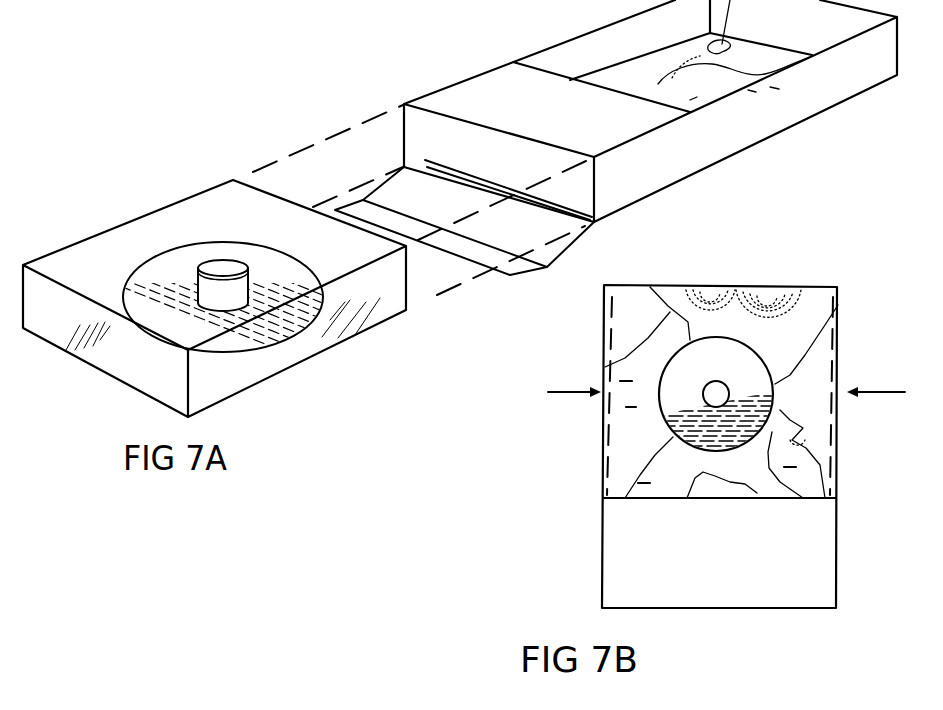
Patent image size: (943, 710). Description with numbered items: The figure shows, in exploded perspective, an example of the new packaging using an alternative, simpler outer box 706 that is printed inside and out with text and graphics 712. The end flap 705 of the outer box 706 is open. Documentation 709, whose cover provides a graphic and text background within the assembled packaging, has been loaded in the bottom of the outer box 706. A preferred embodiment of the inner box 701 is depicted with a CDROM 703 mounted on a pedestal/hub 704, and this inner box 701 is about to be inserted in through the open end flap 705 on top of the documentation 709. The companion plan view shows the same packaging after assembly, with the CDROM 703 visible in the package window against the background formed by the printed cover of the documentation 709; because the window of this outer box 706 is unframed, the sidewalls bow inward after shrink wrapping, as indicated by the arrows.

In FIG. 7A, the inner box 701 is at (307, 360).
In FIG. 7A, the CDROM 703 is at (166, 256).
In FIG. 7B, the CDROM 703 is at (670, 407).
In FIG. 7A, the pedestal/hub 704 is at (222, 258).
In FIG. 7B, the pedestal/hub 704 is at (717, 395).
In FIG. 7A, the end flap 705 is at (561, 256).
In FIG. 7A, the outer box 706 is at (777, 131).
In FIG. 7B, the outer box 706 is at (762, 285).
In FIG. 7B, the documentation 709 is at (793, 318).
In FIG. 7A, the text and graphics 712 is at (570, 79).